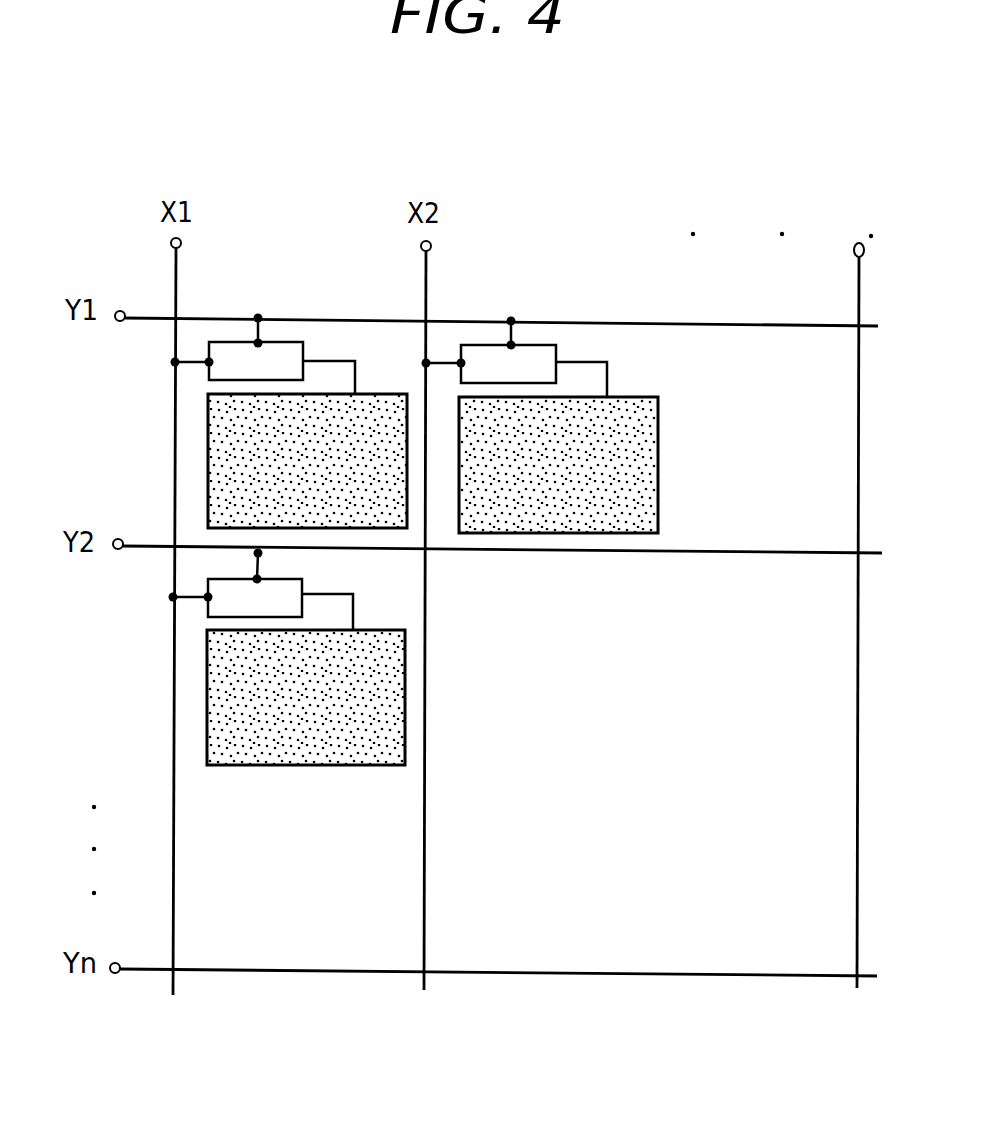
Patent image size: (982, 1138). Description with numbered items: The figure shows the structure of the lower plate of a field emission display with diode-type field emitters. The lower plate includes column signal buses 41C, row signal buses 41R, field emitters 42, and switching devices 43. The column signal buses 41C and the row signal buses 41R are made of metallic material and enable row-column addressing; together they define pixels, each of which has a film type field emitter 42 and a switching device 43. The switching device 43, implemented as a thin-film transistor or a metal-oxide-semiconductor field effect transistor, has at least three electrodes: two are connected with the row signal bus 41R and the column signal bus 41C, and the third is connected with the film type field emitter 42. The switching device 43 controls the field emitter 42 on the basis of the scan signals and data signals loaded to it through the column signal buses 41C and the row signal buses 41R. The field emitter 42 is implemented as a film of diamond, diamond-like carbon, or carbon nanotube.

The row signal bus 41R is at (345, 318).
The column signal bus 41C is at (175, 421).
The field emitter 42 is at (227, 482).
The switching device 43 is at (237, 355).